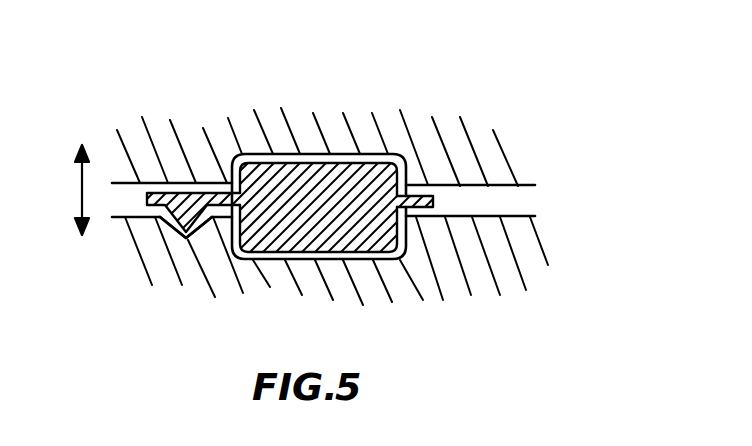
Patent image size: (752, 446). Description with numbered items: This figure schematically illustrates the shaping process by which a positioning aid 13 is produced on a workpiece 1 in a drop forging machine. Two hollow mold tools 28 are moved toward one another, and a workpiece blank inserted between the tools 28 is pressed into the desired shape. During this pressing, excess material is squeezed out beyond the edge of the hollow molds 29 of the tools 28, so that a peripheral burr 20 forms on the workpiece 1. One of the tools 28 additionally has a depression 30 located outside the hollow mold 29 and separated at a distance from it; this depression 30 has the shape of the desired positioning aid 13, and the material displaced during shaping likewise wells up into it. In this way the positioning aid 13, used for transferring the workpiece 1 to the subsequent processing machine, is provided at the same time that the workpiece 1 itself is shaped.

The workpiece 1 is at (315, 233).
The positioning aid 13 is at (190, 193).
The peripheral burr 20 is at (433, 207).
The hollow mold tools 28 is at (497, 168).
The hollow molds 29 is at (283, 157).
The depression 30 is at (172, 220).